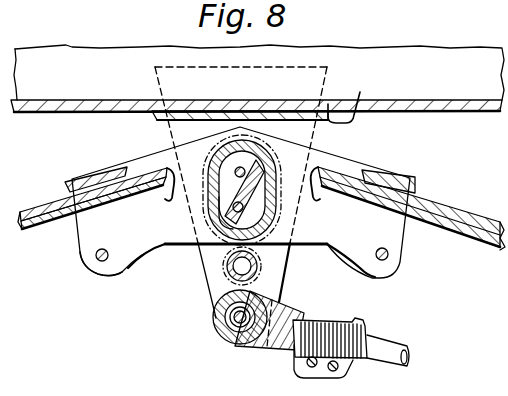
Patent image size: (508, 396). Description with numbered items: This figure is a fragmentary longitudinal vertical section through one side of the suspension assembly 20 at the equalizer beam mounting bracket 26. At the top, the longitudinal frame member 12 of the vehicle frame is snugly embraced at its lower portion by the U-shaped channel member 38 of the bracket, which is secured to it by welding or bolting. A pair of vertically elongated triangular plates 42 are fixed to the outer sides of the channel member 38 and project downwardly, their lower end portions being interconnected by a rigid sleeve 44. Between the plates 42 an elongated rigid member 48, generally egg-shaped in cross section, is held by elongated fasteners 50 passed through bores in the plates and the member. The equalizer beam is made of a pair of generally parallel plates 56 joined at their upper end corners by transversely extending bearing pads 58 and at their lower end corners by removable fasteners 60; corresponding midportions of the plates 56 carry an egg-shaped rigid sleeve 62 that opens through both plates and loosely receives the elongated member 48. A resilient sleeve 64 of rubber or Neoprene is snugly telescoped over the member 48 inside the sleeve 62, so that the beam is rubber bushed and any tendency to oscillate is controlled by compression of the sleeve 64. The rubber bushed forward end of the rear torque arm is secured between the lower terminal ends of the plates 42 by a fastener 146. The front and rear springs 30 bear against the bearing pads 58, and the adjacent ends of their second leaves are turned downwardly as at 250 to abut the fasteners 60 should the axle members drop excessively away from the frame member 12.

The longitudinal frame member 12 is at (424, 113).
The U-shaped channel member 38 is at (265, 95).
The equalizer beam mounting bracket 26 is at (198, 261).
The triangular plates 42 is at (285, 249).
The parallel plates 56 is at (85, 228).
The fasteners 60 is at (105, 263).
The springs 30 is at (48, 226).
The turned-down leaf ends 250 is at (158, 192).
The bearing pads 58 is at (97, 183).
The elongated rigid member 48 is at (259, 176).
The elongated fasteners 50 is at (211, 194).
The resilient sleeve 64 is at (148, 154).
The rigid sleeve 62 is at (213, 217).
The rigid sleeve 44 is at (260, 272).
The fastener 146 is at (224, 322).
The suspension assembly 20 is at (268, 352).